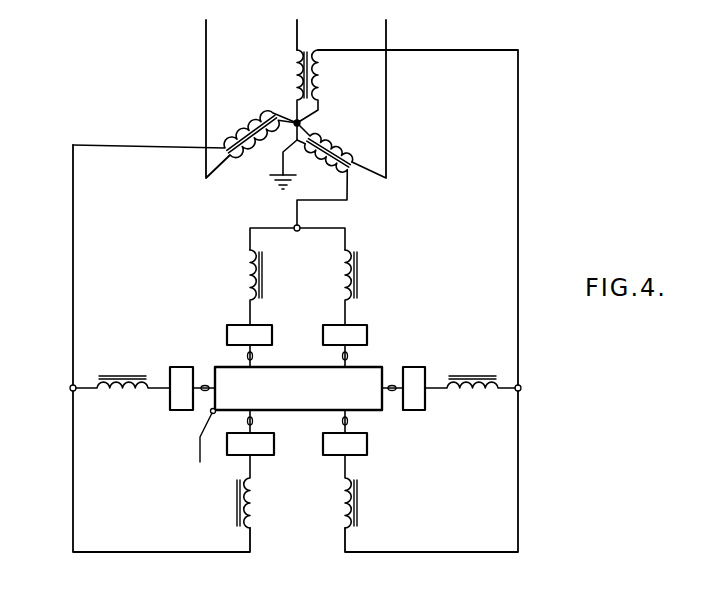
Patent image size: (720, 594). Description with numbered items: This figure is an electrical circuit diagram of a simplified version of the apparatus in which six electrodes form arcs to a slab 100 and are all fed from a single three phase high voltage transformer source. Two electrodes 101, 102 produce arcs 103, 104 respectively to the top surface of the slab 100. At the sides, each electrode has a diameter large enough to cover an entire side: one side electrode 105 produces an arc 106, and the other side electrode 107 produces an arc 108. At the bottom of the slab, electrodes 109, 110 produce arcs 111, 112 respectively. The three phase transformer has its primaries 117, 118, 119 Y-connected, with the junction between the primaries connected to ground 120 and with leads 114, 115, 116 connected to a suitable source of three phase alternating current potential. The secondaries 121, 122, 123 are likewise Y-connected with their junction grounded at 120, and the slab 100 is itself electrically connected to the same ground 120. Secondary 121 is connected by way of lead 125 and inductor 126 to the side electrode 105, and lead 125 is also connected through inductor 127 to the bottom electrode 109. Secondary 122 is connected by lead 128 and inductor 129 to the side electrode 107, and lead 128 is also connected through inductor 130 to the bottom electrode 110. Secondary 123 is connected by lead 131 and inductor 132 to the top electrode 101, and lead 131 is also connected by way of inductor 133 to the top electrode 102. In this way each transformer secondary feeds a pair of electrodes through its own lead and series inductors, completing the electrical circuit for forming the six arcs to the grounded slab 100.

The slab 100 is at (373, 366).
The electrode 101 is at (242, 322).
The electrode 102 is at (343, 322).
The arc 103 is at (247, 358).
The arc 104 is at (345, 360).
The side electrode 105 is at (179, 367).
The arc 106 is at (207, 390).
The side electrode 107 is at (425, 372).
The arc 108 is at (392, 392).
The electrode 109 is at (262, 458).
The electrode 110 is at (362, 457).
The arc 111 is at (254, 422).
The arc 112 is at (338, 420).
The lead 114 is at (206, 30).
The lead 115 is at (297, 30).
The lead 116 is at (386, 30).
The primary 117 is at (261, 154).
The primary 118 is at (295, 72).
The primary 119 is at (330, 150).
The ground 120 is at (281, 182).
The secondary 121 is at (251, 131).
The secondary 122 is at (321, 79).
The secondary 123 is at (334, 173).
The lead 125 is at (62, 271).
The inductor 126 is at (133, 395).
The inductor 127 is at (252, 512).
The lead 128 is at (518, 140).
The inductor 129 is at (493, 393).
The inductor 130 is at (343, 520).
The lead 131 is at (349, 206).
The inductor 132 is at (241, 265).
The inductor 133 is at (342, 265).